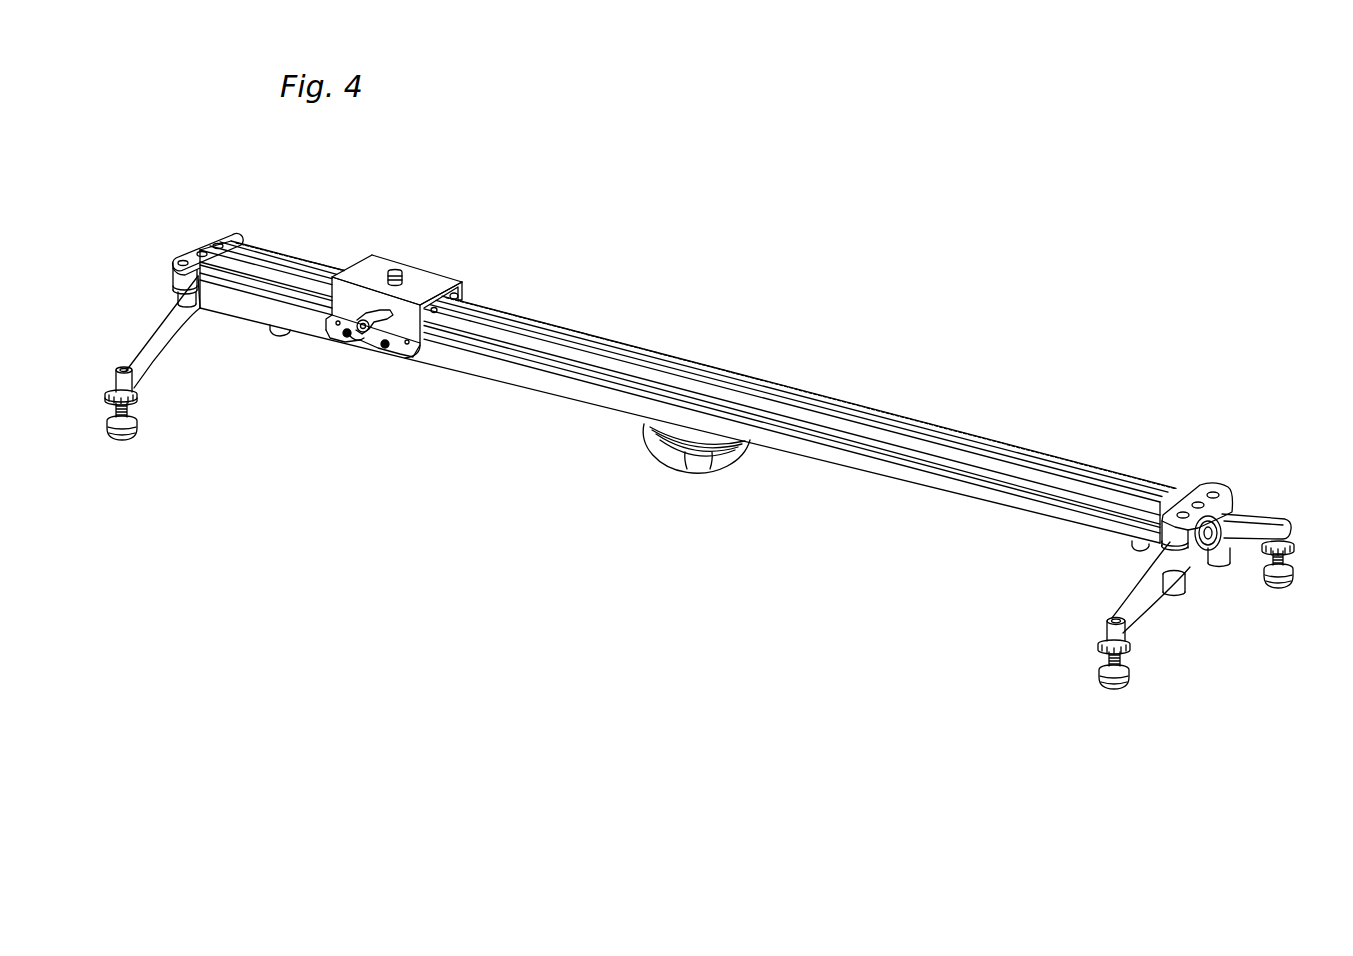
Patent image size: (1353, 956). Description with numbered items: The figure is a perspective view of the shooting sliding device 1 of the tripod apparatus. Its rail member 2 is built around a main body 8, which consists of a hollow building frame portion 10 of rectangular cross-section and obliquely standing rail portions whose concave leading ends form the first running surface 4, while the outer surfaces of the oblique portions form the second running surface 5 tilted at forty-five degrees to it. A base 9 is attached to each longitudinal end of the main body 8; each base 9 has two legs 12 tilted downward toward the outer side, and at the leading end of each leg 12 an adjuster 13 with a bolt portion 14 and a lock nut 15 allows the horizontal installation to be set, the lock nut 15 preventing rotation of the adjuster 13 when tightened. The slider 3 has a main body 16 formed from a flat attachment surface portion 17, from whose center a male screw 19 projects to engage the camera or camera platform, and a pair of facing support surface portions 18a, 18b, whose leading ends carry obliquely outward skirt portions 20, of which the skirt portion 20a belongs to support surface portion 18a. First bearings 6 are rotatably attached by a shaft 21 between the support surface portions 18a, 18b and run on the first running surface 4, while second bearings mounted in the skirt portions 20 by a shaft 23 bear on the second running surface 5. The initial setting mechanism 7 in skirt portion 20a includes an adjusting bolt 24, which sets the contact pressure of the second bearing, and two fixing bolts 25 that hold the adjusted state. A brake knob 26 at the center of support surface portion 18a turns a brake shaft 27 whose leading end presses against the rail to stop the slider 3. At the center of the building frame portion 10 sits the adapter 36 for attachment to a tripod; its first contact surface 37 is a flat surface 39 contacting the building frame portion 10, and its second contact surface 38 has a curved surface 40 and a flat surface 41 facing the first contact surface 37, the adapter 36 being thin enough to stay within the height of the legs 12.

The shooting sliding device 1 is at (905, 346).
The rail member 2 is at (997, 434).
The slider 3 is at (432, 257).
The first running surface 4 is at (902, 434).
The second running surface 5 is at (920, 470).
The first bearing 6 is at (456, 299).
The initial setting mechanism 7 is at (358, 362).
The main body 8 is at (792, 388).
The base 9 is at (230, 234).
The building frame portion 10 is at (815, 462).
The leg 12 is at (150, 336).
The adjuster 13 is at (273, 330).
The bolt portion 14 is at (134, 412).
The lock nut 15 is at (136, 398).
The main body 16 is at (388, 258).
The attachment surface portion 17 is at (438, 277).
The support surface portion 18a is at (323, 311).
The support surface portion 18b is at (463, 290).
The male screw 19 is at (429, 268).
The brake plate 20 is at (335, 333).
The skirt portion 20a is at (402, 358).
The shaft 21 is at (447, 325).
The shaft 23 is at (338, 326).
The adjusting bolt 24 is at (365, 355).
The fixing bolt 25 is at (345, 338).
The brake knob 26 is at (376, 313).
The brake shaft 27 is at (350, 320).
The adapter 36 is at (663, 461).
The first contact surface 37 is at (642, 444).
The second contact surface 38 is at (708, 487).
The flat surface 39 is at (648, 433).
The curved surface 40 is at (720, 462).
The flat surface 41 is at (690, 470).